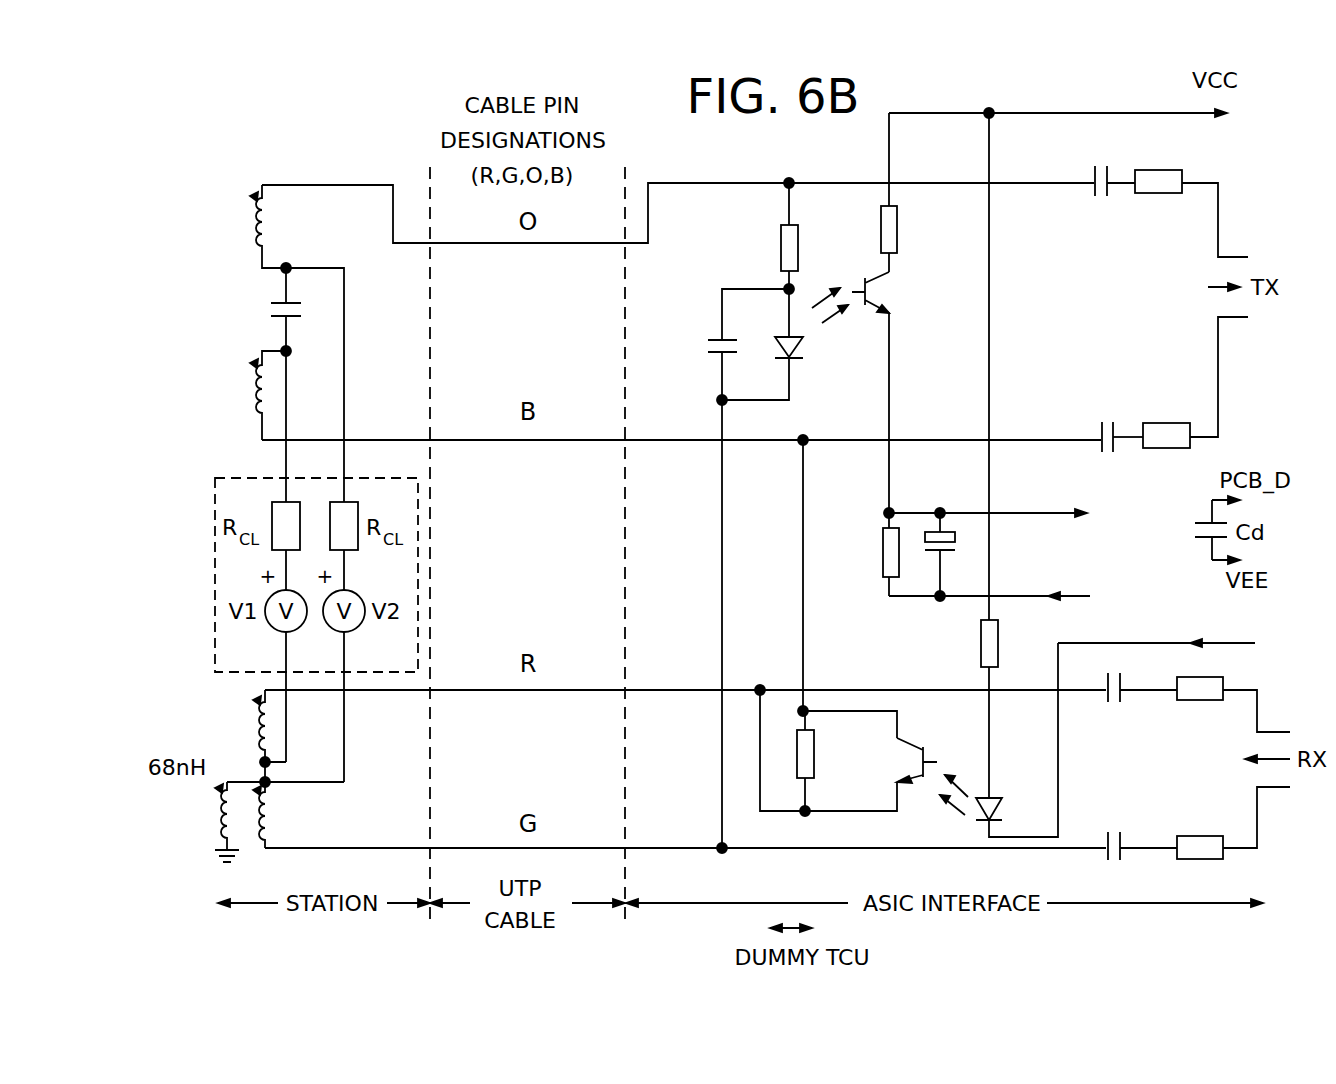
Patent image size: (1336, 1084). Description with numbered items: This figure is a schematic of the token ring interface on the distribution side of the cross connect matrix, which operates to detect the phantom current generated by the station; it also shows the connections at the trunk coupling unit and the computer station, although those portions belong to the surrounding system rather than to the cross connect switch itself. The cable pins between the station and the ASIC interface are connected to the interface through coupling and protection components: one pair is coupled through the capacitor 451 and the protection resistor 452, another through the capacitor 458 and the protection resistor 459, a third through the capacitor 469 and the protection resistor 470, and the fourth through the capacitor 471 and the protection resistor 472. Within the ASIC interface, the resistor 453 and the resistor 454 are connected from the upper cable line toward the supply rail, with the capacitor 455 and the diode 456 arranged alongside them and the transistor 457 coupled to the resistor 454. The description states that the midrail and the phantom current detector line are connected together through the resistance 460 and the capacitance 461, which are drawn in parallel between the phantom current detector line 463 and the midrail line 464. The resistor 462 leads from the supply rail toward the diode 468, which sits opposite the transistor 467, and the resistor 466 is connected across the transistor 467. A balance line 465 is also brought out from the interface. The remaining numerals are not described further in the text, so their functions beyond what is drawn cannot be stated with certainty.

The capacitor C1 451 is at (1092, 177).
The protection resistor RPROT 452 is at (1183, 171).
The resistor R1 453 is at (798, 236).
The resistor R4 454 is at (882, 237).
The capacitor C5 455 is at (712, 358).
The photodiode D1 456 is at (793, 362).
The phototransistor Q1 457 is at (893, 305).
The capacitor C2 458 is at (1098, 432).
The protection resistor RPROT 459 is at (1193, 450).
The resistance 460 is at (883, 568).
The capacitance 461 is at (955, 530).
The resistor R5 462 is at (1000, 642).
The PCDET signal line 463 is at (1080, 497).
The MIDRAIL signal line 464 is at (1122, 570).
The PCBAL signal line 465 is at (1245, 625).
The resistor R2 466 is at (815, 780).
The phototransistor Q2 467 is at (912, 742).
The photodiode D2 468 is at (977, 817).
The capacitor C3 469 is at (1107, 680).
The protection resistor RPROT 470 is at (1223, 678).
The capacitor C4 471 is at (1103, 853).
The protection resistor RPROT 472 is at (1203, 862).